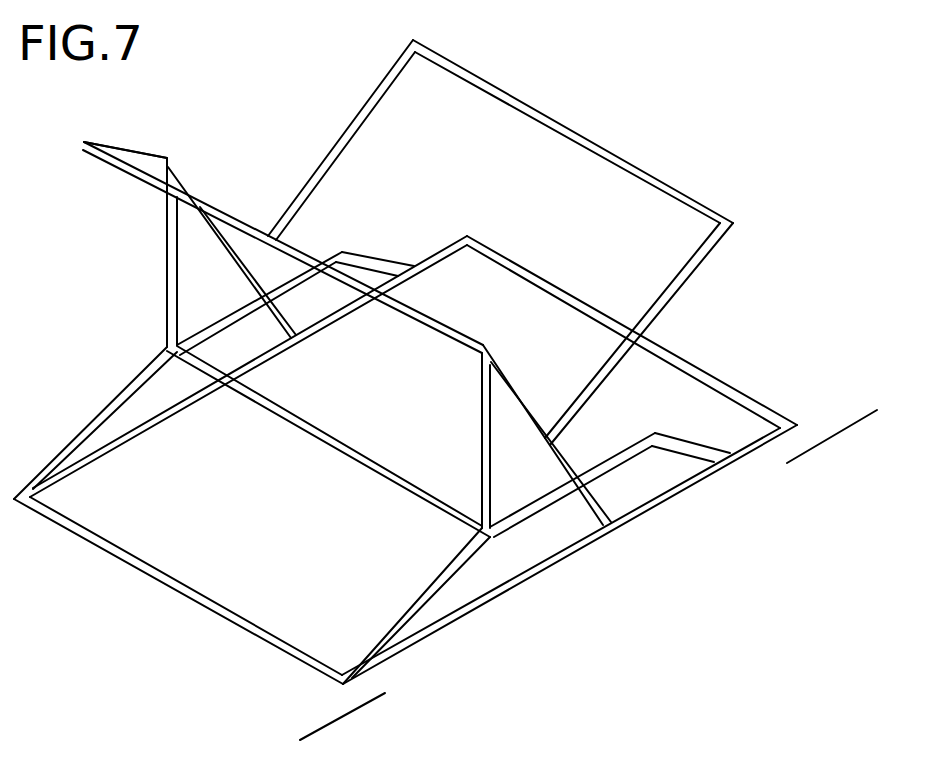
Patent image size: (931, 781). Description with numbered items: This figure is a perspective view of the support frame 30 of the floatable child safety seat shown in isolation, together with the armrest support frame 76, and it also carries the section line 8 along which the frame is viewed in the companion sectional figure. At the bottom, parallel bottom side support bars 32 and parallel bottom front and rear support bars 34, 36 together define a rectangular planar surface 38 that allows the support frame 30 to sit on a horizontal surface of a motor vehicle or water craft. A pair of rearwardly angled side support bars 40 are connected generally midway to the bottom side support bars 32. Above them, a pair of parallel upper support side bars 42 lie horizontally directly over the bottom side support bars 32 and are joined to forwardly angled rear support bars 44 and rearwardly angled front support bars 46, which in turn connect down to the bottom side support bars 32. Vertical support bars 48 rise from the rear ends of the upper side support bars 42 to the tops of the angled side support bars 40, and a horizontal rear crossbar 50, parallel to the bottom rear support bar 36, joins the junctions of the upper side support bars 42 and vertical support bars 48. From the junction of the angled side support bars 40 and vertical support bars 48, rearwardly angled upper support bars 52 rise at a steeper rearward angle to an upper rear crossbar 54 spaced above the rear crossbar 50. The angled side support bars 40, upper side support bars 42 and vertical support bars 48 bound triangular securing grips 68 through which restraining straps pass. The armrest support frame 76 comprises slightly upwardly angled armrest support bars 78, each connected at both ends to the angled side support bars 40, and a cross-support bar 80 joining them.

The support frame 30 is at (203, 46).
The bottom side support bars 32 is at (122, 442).
The bottom front support bar 34 is at (708, 372).
The bottom rear support bar 36 is at (220, 610).
The rectangular planar surface 38 is at (515, 343).
The angled side support bars 40 is at (222, 245).
The upper support side bars 42 is at (222, 328).
The angled rear support bars 44 is at (117, 400).
The angled front support bars 46 is at (372, 262).
The vertical support bars 48 is at (170, 317).
The rear crossbar 50 is at (347, 453).
The angled upper support bars 52 is at (133, 153).
The upper rear crossbar 54 is at (148, 183).
The triangular securing grips 68 is at (222, 295).
The armrest support frame 76 is at (622, 148).
The armrest support bars 78 is at (353, 118).
The cross-support bar 80 is at (677, 193).
The section line 8- 8 is at (348, 724).